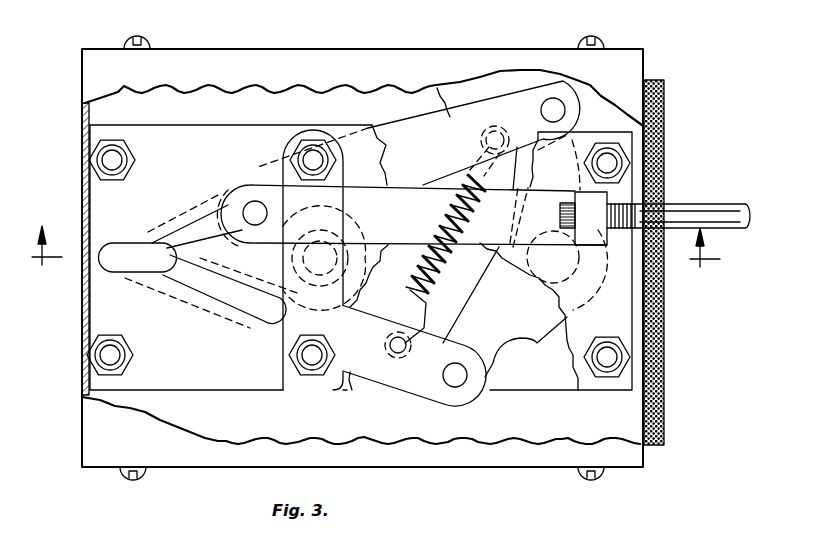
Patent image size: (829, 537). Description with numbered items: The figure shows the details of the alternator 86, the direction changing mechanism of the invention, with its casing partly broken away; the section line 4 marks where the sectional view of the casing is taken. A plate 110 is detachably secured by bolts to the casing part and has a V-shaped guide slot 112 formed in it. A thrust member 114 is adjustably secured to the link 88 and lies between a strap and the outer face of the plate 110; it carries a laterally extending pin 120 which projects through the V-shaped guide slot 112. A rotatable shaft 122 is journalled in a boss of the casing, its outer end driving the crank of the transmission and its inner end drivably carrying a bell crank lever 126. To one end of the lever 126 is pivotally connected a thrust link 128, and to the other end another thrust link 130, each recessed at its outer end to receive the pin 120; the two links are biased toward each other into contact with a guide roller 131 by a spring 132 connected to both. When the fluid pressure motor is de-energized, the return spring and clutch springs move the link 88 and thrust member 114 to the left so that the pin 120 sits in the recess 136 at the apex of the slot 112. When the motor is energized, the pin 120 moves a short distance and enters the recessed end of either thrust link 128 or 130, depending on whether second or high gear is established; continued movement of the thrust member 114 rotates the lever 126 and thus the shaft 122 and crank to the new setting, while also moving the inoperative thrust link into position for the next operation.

The alternator 86 is at (487, 45).
The link 88 is at (693, 207).
The plate 110 is at (220, 383).
The V-shaped guide slot 112 is at (145, 243).
The thrust member 114 is at (423, 185).
The pin 120 is at (272, 177).
The rotatable shaft 122 is at (568, 312).
The bell crank lever 126 is at (493, 353).
The thrust link 128 is at (447, 398).
The thrust link 130 is at (440, 90).
The guide roller 131 is at (371, 300).
The spring 132 is at (452, 270).
The recess 136 is at (113, 262).
The section line 4- 4 is at (376, 262).